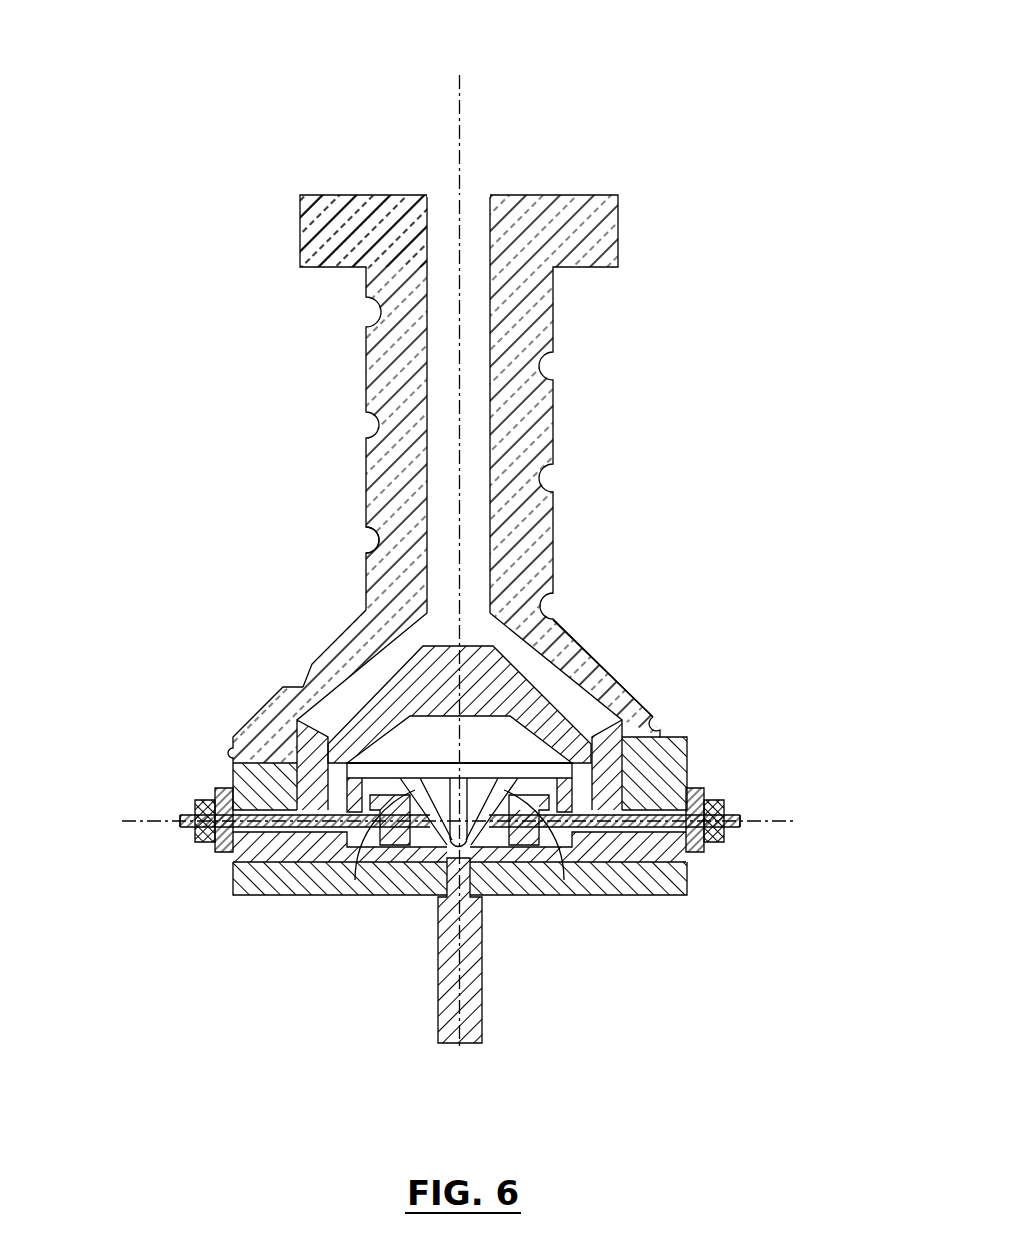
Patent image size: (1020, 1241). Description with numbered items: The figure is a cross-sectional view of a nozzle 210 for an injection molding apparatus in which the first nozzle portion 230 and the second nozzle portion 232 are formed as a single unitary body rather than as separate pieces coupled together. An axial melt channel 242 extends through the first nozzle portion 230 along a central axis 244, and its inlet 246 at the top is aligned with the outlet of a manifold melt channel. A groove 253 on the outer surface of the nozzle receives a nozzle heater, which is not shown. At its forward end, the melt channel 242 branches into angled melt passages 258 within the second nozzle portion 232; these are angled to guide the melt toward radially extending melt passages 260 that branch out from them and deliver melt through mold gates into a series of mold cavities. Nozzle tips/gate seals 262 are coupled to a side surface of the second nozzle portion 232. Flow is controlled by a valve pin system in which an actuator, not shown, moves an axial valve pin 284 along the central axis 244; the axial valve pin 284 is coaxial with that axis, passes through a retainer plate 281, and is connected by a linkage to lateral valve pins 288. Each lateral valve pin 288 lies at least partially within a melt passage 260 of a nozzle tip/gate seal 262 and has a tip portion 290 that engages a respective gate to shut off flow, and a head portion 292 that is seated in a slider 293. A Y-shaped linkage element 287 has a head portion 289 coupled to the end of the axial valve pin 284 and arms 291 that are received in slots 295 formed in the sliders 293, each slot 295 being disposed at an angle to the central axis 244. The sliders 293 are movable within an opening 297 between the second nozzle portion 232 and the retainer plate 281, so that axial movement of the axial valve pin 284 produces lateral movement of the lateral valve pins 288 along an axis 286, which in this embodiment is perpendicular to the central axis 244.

The nozzle 210 is at (490, 544).
The first nozzle portion 230 is at (538, 508).
The second nozzle portion 232 is at (640, 705).
The axial melt channel 242 is at (440, 478).
The central axis 244 is at (462, 92).
The inlet 246 is at (440, 200).
The groove 253 is at (372, 540).
The angled melt passages 258 is at (335, 705).
The radially extending melt passages 260 is at (188, 810).
The nozzle tips/gate seals 262 is at (223, 847).
The retainer plate 281 is at (242, 897).
The axial valve pin 284 is at (485, 1027).
The axis 286 is at (787, 820).
The Y-shaped linkage element 287 is at (490, 897).
The lateral valve pins 288 is at (325, 863).
The head portion 289 is at (492, 900).
The tip portion 290 is at (197, 830).
The arms 291 is at (413, 877).
The head portion 292 is at (665, 760).
The slider 293 is at (347, 873).
The slot 295 is at (365, 770).
The opening 297 is at (333, 712).